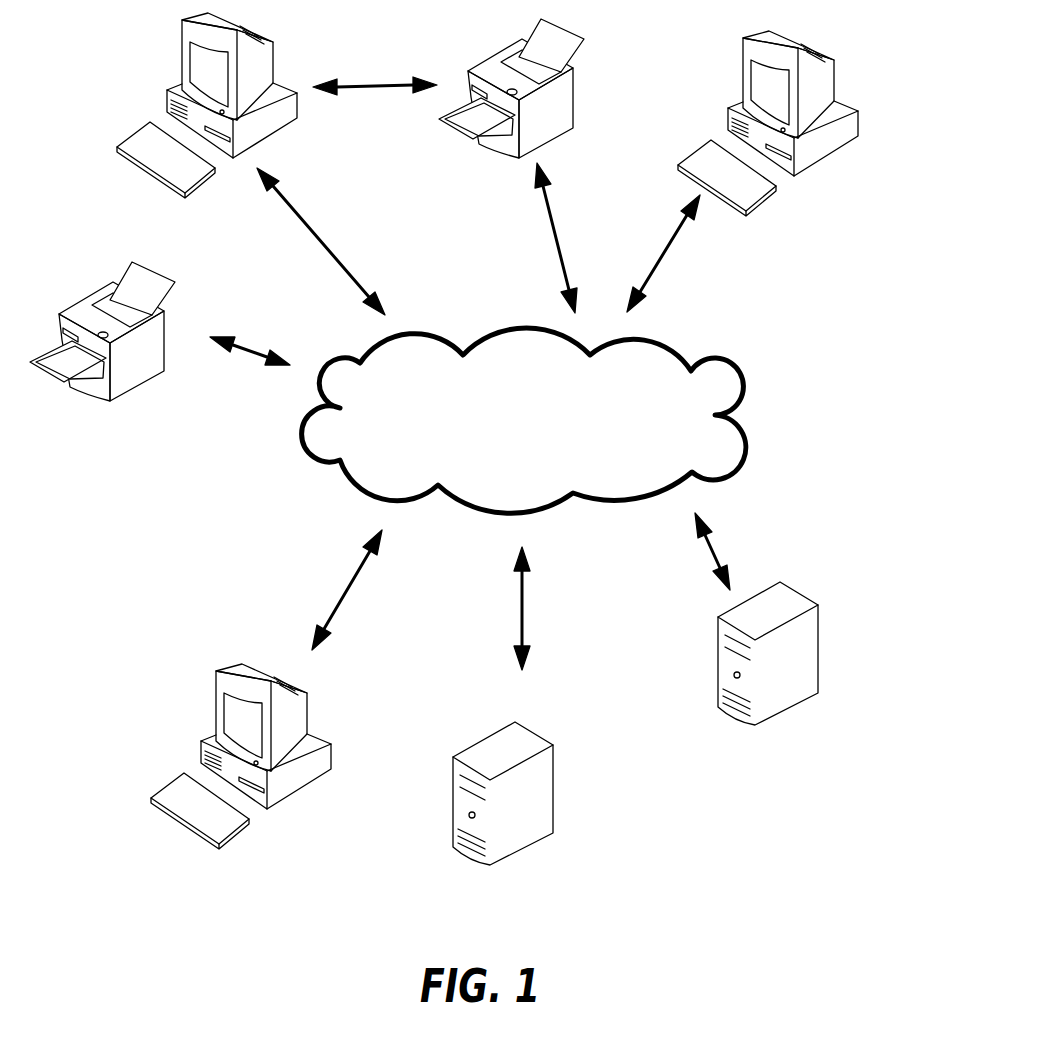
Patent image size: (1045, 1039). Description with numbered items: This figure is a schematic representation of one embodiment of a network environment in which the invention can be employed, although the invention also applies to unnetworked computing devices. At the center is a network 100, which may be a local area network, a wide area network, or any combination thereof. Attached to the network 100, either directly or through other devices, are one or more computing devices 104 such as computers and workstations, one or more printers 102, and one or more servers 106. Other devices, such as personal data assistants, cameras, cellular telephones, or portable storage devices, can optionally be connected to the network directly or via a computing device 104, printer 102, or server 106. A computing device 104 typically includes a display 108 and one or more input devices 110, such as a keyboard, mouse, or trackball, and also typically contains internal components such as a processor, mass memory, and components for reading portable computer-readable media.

The network 100 is at (743, 387).
The printer 102 is at (572, 75).
The computing device 104 is at (491, 434).
The server 106 is at (553, 775).
The display 108 is at (215, 673).
The input device 110 is at (150, 803).